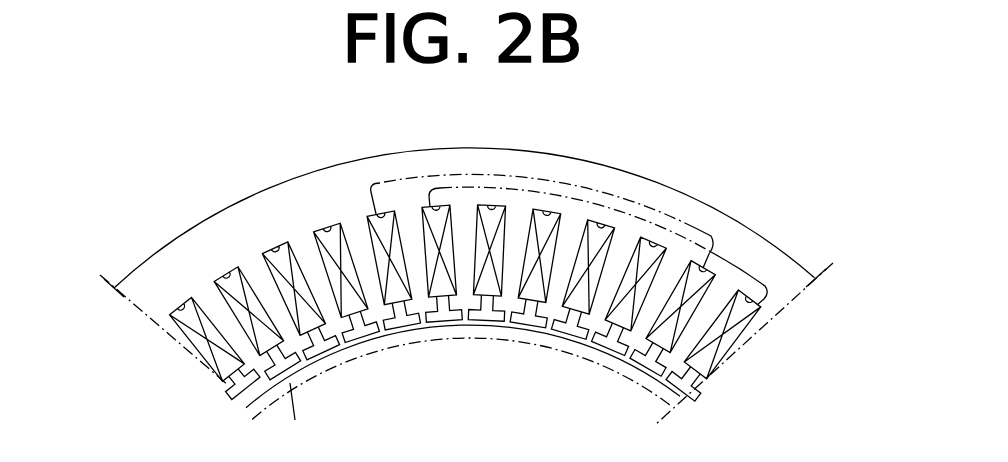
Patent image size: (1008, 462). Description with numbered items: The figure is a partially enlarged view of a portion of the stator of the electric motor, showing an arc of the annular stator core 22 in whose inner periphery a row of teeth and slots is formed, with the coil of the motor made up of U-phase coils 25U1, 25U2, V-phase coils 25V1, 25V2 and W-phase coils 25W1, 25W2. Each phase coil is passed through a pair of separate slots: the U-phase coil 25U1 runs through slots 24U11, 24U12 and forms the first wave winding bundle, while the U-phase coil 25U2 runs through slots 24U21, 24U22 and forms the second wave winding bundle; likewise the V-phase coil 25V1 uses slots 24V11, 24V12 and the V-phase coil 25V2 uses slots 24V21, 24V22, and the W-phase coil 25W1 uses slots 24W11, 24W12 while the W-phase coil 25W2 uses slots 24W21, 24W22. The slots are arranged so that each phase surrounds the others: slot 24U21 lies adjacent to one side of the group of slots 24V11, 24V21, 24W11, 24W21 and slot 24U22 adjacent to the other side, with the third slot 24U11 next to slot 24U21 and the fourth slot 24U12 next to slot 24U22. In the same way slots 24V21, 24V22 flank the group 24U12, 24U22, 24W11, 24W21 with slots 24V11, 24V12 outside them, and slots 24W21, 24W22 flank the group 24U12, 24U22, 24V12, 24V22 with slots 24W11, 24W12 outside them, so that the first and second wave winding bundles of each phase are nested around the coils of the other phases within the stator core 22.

The stator core 22 is at (146, 308).
The slot 24W12 is at (181, 304).
The slot 24W22 is at (226, 272).
The slot 24V12 is at (275, 247).
The slot 24V22 is at (327, 227).
The slot 24U12 is at (375, 213).
The slot 24U22 is at (434, 206).
The slot 24W21 is at (491, 206).
The slot 24W11 is at (548, 212).
The slot 24V21 is at (601, 224).
The slot 24V11 is at (653, 244).
The slot 24U21 is at (704, 270).
The slot 24U11 is at (760, 312).
The W-phase coil 25W1 is at (238, 388).
The W-phase coil 25W2 is at (247, 410).
The V-phase coil 25V1 is at (318, 335).
The V-phase coil 25V2 is at (365, 330).
The U-phase coil 25U1 is at (368, 305).
The U-phase coil 25U2 is at (445, 305).